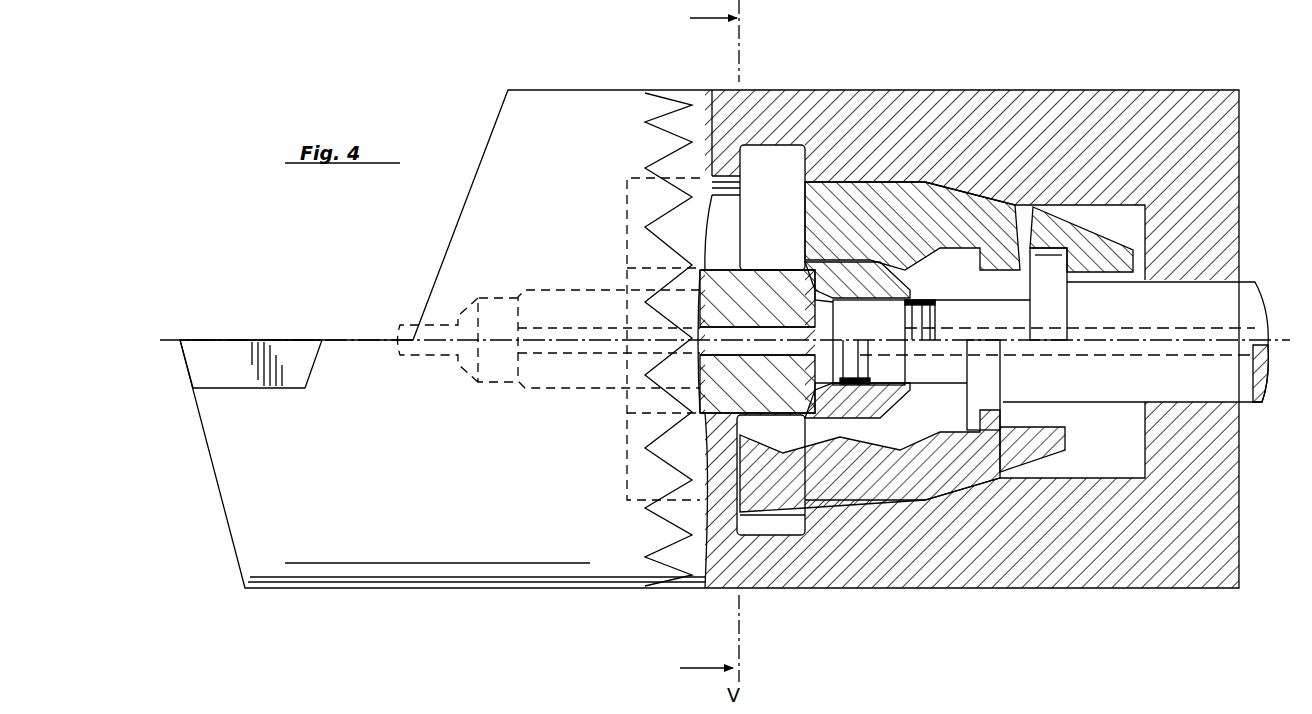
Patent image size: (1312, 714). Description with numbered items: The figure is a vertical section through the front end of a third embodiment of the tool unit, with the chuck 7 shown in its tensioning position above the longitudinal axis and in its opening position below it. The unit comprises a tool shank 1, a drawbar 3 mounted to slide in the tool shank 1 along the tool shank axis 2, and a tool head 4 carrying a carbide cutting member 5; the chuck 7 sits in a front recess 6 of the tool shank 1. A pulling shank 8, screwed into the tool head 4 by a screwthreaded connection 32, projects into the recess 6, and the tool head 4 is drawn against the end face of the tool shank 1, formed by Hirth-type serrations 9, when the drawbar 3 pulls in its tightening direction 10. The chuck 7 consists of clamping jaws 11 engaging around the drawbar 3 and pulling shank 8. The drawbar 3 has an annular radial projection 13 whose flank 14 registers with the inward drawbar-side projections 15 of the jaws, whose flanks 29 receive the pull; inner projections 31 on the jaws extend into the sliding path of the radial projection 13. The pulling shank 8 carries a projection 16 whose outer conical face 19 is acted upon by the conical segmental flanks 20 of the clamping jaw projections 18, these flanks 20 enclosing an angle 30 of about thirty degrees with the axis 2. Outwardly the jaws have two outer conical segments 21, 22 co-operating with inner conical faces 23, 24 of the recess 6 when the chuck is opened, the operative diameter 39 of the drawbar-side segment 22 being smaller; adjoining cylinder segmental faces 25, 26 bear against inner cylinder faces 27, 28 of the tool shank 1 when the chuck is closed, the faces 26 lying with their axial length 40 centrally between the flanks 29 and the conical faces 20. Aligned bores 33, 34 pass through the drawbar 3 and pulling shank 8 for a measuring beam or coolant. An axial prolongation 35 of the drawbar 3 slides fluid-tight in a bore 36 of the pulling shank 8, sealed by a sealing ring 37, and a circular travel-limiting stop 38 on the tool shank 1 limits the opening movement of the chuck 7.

The tool shank 1 is at (1170, 90).
The tool shank axis 2 is at (1250, 345).
The drawbar 3 is at (1081, 382).
The tool head 4 is at (565, 88).
The cutting member 5 is at (240, 348).
The front recess 6 is at (790, 150).
The chuck 7 is at (802, 222).
The pulling shank 8 is at (752, 300).
The Hirth-type serrations 9 is at (662, 105).
The tightening direction 10 is at (1296, 418).
The clamping jaws 11 is at (825, 205).
The radial projection 13 is at (990, 375).
The flank 14 is at (1087, 250).
The drawbar-side projections 15 is at (1115, 262).
The projection 16 is at (858, 262).
The clamping jaw projections 18 is at (752, 437).
The outer conical face 19 is at (800, 440).
The conical segmental flanks 20 is at (792, 282).
The tool-head-side outer conical segment 21 is at (900, 185).
The drawbar-side outer conical segment 22 is at (1075, 255).
The inner conical face 23 is at (808, 182).
The inner conical face 24 is at (948, 195).
The cylinder segmental face 25 is at (760, 520).
The cylinder segmental face 26 is at (970, 200).
The inner cylinder face 27 is at (915, 190).
The inner cylinder face 28 is at (1132, 210).
The flanks 29 is at (1067, 290).
The angle 30 is at (948, 455).
The inner projections 31 is at (1020, 260).
The screwthreaded connection 32 is at (567, 390).
The bore 33 is at (1210, 330).
The bore 34 is at (410, 330).
The axial prolongation 35 is at (990, 280).
The bore 36 is at (868, 300).
The sealing ring 37 is at (905, 318).
The travel-limiting stop 38 is at (752, 160).
The operative diameter 39 is at (1097, 325).
The axial length 40 is at (1015, 205).